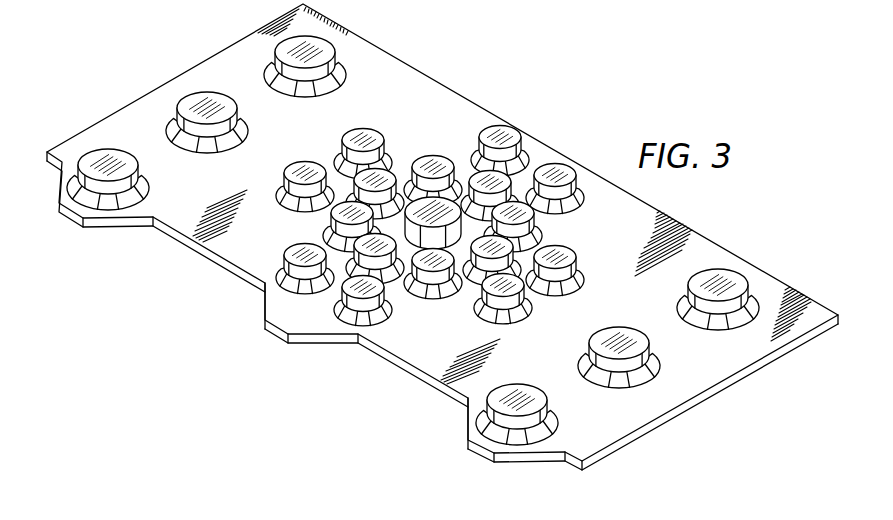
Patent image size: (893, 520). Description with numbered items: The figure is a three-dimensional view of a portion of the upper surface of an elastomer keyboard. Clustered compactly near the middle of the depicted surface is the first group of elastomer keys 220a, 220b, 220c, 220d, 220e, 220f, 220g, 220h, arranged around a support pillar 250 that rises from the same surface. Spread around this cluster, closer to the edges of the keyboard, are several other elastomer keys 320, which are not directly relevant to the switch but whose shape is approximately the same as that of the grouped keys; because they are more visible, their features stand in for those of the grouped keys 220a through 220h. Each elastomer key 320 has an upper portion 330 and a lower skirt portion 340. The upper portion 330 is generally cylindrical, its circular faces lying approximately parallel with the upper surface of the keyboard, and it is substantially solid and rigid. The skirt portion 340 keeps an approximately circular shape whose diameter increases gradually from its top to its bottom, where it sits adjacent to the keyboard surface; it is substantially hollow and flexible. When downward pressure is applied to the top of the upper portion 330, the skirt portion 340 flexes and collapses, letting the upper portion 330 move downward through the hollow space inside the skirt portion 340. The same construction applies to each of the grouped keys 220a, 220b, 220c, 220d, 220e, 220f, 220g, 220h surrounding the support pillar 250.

The elastomer key 220a is at (492, 173).
The elastomer key 220b is at (548, 168).
The elastomer key 220c is at (552, 243).
The elastomer key 220d is at (432, 294).
The elastomer key 220e is at (333, 298).
The elastomer key 220f is at (342, 197).
The elastomer key 220g is at (365, 177).
The elastomer key 220h is at (442, 164).
The support pillar 250 is at (435, 200).
The other elastomer key 320 is at (645, 392).
The upper portion 330 is at (603, 372).
The skirt portion 340 is at (585, 363).